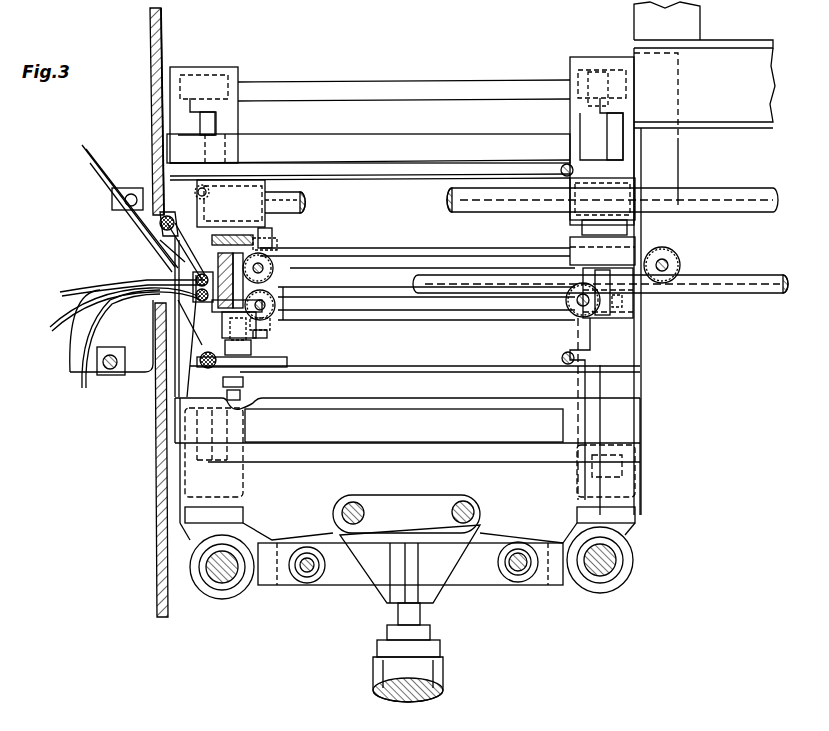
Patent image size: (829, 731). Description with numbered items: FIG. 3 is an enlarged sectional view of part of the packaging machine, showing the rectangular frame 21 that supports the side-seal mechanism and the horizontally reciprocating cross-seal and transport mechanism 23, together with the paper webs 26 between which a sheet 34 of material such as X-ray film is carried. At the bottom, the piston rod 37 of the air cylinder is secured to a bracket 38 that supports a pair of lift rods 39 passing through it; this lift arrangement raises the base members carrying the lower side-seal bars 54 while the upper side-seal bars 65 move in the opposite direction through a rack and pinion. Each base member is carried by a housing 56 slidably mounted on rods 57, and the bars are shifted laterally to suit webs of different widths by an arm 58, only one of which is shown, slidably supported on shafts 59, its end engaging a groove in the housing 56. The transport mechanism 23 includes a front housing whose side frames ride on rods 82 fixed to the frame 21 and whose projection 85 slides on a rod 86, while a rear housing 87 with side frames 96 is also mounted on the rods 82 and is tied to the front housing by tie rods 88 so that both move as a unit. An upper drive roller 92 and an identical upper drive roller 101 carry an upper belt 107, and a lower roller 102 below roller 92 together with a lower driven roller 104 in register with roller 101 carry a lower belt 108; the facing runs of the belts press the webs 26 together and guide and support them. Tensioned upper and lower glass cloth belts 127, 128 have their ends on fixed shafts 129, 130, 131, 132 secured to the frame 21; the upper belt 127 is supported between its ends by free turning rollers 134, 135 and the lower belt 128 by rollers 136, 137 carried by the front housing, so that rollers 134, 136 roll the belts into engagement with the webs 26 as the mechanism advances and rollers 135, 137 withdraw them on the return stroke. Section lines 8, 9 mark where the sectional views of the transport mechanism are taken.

The section line 8- 8 is at (661, 268).
The section line 9- 9 is at (290, 343).
The rectangular frame 21 is at (157, 545).
The cross-seal and transport mechanism 23 is at (353, 325).
The webs 26 is at (80, 160).
The sheet 34 is at (52, 331).
The piston rod 37 is at (398, 612).
The bracket 38 is at (450, 500).
The lift rods 39 is at (342, 513).
The lower side-seal bars 54 is at (440, 395).
The housing 56 is at (232, 482).
The rods 57 is at (215, 580).
The arms 58 is at (483, 570).
The shafts 59 is at (305, 578).
The upper side-seal bars 65 is at (347, 141).
The rods 82 is at (305, 322).
The projection 85 is at (272, 184).
The rod 86 is at (292, 207).
The rear housing 87 is at (572, 238).
The tie rods 88 is at (575, 312).
The upper drive roller 92 is at (672, 260).
The side frames 96 is at (630, 300).
The upper drive roller 101 is at (264, 268).
The lower roller 102 is at (583, 315).
The lower driven roller 104 is at (272, 298).
The upper belt 107 is at (385, 250).
The lower belt 108 is at (437, 292).
The upper glass cloth belts 127 is at (375, 167).
The lower glass cloth belts 128 is at (343, 372).
The fixed shaft 129 is at (160, 228).
The fixed shaft 130 is at (563, 166).
The fixed shaft 131 is at (165, 325).
The fixed shaft 132 is at (570, 364).
The free turning roller 134 is at (147, 268).
The free turning roller 135 is at (155, 178).
The free turning roller 136 is at (178, 330).
The free turning roller 137 is at (180, 393).